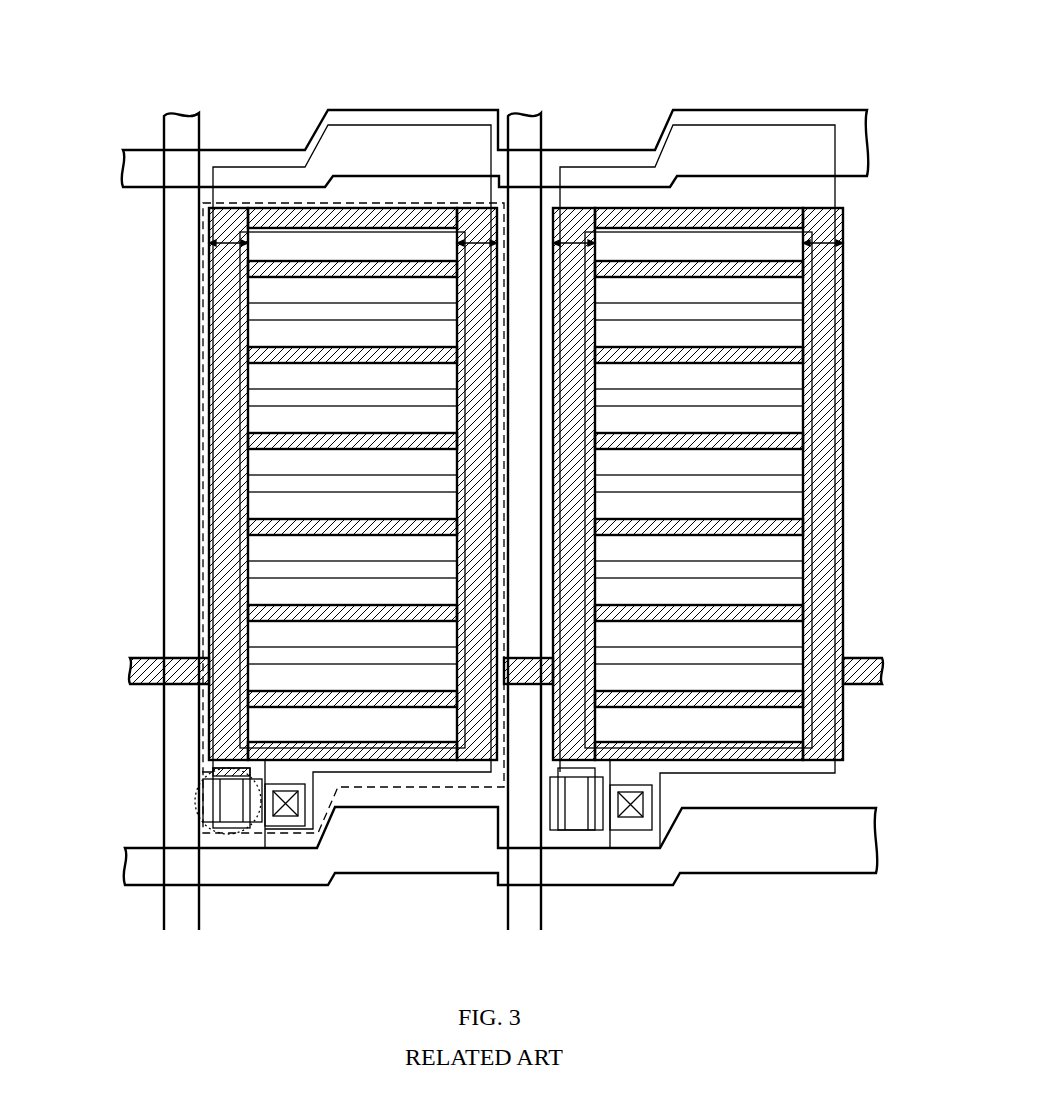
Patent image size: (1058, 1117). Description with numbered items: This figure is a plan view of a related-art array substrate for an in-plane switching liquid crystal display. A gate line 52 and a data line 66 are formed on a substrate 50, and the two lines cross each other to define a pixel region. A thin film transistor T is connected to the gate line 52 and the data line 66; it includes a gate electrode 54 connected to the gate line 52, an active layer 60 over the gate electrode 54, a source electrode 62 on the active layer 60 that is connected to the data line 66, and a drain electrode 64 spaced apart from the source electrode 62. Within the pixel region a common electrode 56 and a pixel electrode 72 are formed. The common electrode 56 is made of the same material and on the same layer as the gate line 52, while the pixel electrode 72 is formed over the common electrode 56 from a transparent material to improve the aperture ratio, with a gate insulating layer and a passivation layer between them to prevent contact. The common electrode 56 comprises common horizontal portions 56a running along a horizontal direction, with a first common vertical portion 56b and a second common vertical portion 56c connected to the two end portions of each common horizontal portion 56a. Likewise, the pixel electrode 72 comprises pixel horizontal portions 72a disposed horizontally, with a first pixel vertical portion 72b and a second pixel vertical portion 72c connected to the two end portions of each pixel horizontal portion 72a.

The substrate 50 is at (925, 850).
The gate line 52 is at (809, 857).
The gate electrode 54 is at (240, 763).
The common electrode 56 is at (353, 384).
The common horizontal portions 56a is at (337, 208).
The first common vertical portion 56b is at (228, 243).
The second common vertical portion 56c is at (477, 243).
The active layer 60 is at (228, 837).
The source electrode 62 is at (212, 838).
The drain electrode 64 is at (295, 822).
The data line 66 is at (175, 112).
The pixel electrode 72 is at (698, 384).
The pixel horizontal portions 72a is at (700, 311).
The first pixel vertical portion 72b is at (572, 243).
The second pixel vertical portion 72c is at (820, 243).
The thin film transistor T is at (248, 838).